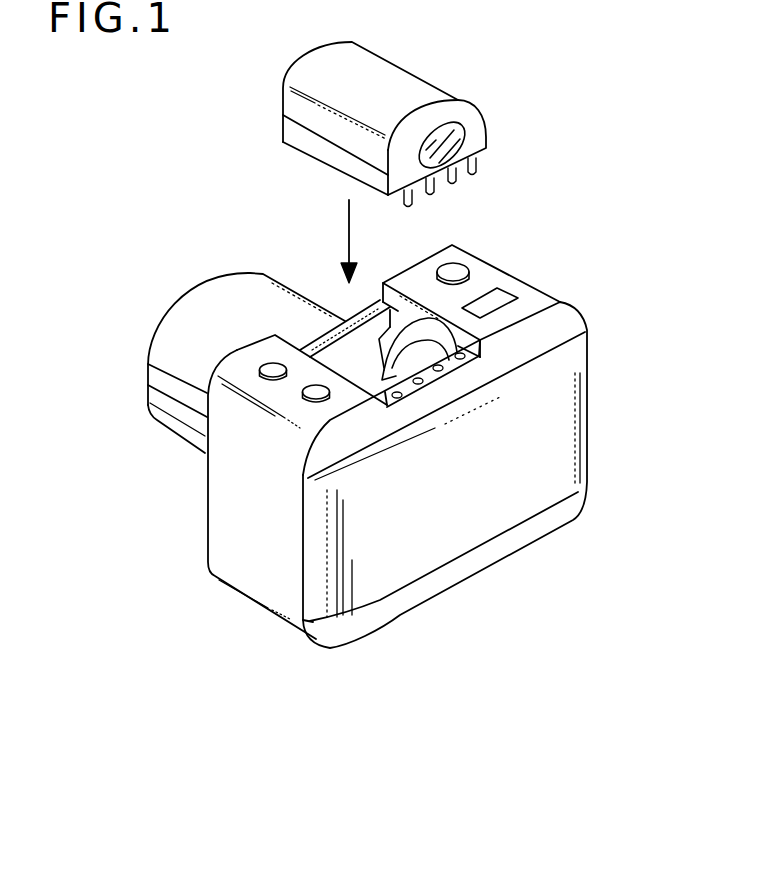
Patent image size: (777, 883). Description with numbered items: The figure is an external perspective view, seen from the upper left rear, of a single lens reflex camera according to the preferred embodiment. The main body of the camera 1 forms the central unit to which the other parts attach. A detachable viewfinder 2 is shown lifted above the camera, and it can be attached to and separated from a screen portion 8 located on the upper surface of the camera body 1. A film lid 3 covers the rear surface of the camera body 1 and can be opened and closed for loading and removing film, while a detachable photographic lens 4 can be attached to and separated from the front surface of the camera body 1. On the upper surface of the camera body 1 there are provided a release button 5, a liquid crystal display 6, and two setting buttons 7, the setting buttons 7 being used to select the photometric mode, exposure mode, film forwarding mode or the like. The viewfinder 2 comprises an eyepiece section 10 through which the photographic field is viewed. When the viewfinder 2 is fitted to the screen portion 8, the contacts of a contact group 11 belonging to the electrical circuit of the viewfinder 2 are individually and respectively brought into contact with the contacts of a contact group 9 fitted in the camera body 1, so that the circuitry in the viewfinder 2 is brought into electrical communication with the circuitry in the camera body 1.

The main body of the camera 1 is at (218, 553).
The detachable viewfinder 2 is at (360, 70).
The film lid 3 is at (553, 440).
The detachable photographic lens 4 is at (167, 351).
The release button 5 is at (453, 262).
The liquid crystal display 6 is at (505, 298).
The setting buttons 7 is at (313, 406).
The screen portion 8 is at (372, 303).
The contact group 9 is at (407, 349).
The eyepiece section 10 is at (470, 126).
The contact group 11 is at (455, 190).